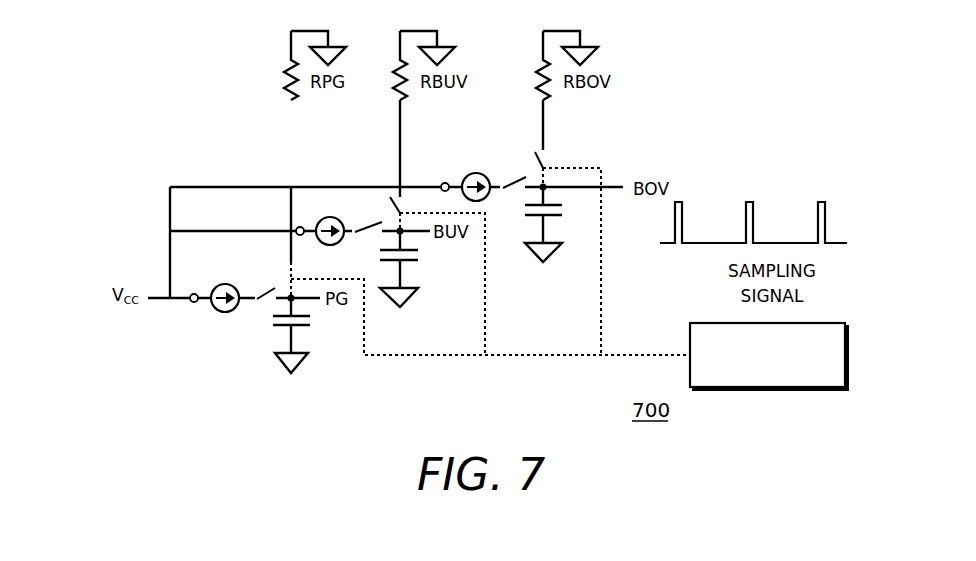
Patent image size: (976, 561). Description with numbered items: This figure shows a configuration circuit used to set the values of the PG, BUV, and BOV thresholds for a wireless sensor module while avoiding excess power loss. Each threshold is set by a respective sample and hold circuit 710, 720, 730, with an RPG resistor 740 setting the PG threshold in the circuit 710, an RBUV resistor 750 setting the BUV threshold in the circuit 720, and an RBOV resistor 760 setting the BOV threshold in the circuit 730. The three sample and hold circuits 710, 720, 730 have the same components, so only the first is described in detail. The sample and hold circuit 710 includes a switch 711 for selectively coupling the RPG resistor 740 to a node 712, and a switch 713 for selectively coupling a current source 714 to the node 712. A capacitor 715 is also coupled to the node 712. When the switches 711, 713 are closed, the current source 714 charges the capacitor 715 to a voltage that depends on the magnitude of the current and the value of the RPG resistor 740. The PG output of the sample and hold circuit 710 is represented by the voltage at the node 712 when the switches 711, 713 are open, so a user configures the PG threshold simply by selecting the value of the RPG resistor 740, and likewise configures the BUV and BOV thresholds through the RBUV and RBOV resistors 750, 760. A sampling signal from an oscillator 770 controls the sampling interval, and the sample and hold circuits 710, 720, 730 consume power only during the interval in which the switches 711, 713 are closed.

The sample and hold circuit 710 is at (198, 372).
The switch 711 is at (291, 282).
The node 712 is at (300, 300).
The switch 713 is at (260, 295).
The current source 714 is at (213, 312).
The capacitor 715 is at (272, 328).
The sample and hold circuit 720 is at (433, 306).
The sample and hold circuit 730 is at (563, 277).
The RPG resistor 740 is at (285, 98).
The RBUV resistor 750 is at (394, 98).
The RBOV resistor 760 is at (540, 98).
The oscillator 770 is at (853, 353).